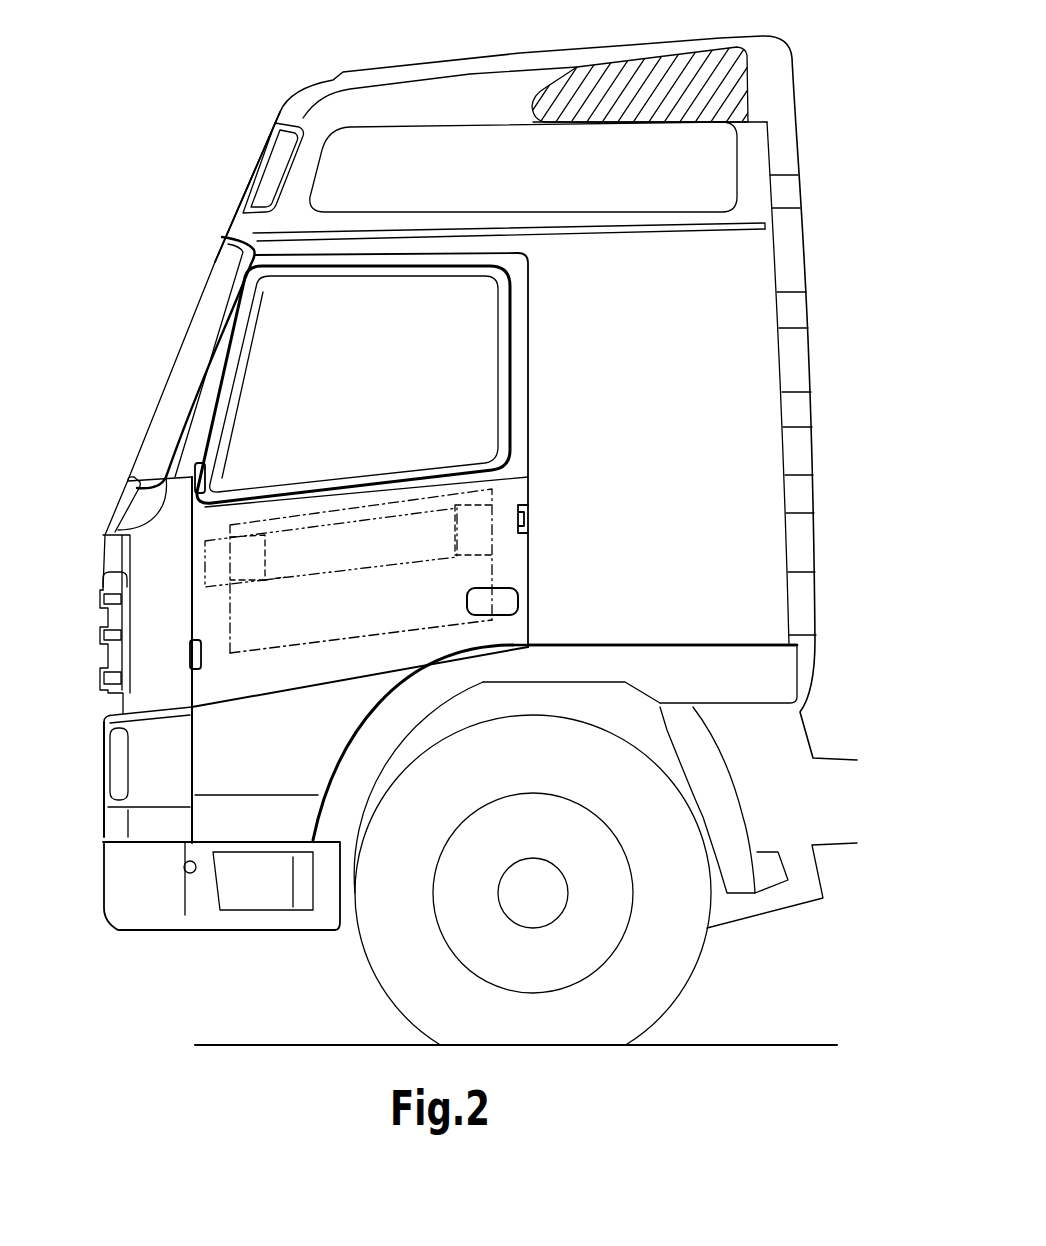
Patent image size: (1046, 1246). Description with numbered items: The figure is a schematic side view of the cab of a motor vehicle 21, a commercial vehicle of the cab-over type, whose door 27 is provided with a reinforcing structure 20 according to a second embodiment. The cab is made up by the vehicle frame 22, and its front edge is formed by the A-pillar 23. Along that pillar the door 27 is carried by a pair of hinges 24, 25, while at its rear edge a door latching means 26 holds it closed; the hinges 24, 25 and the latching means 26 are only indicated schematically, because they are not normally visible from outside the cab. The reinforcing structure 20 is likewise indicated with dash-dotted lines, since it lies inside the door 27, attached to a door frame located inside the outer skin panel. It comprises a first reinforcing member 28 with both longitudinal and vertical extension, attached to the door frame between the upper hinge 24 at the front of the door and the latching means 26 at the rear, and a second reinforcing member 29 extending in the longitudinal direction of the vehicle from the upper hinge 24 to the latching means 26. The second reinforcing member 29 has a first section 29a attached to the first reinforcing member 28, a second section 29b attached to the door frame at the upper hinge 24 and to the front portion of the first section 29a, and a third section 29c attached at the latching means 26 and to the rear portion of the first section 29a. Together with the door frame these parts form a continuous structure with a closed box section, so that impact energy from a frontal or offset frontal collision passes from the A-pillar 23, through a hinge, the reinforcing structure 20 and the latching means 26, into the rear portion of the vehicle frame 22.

The reinforcing structure 20 is at (503, 486).
The motor vehicle 21 is at (282, 80).
The vehicle frame 22 is at (672, 297).
The A-pillar 23 is at (210, 330).
The upper hinge 24 is at (195, 476).
The hinge 25 is at (190, 652).
The door latching means 26 is at (532, 517).
The door 27 is at (367, 674).
The first reinforcing member 28 is at (367, 609).
The second reinforcing member 29 is at (367, 559).
The first section 29a is at (280, 567).
The second section 29b is at (222, 550).
The third section 29c is at (510, 538).